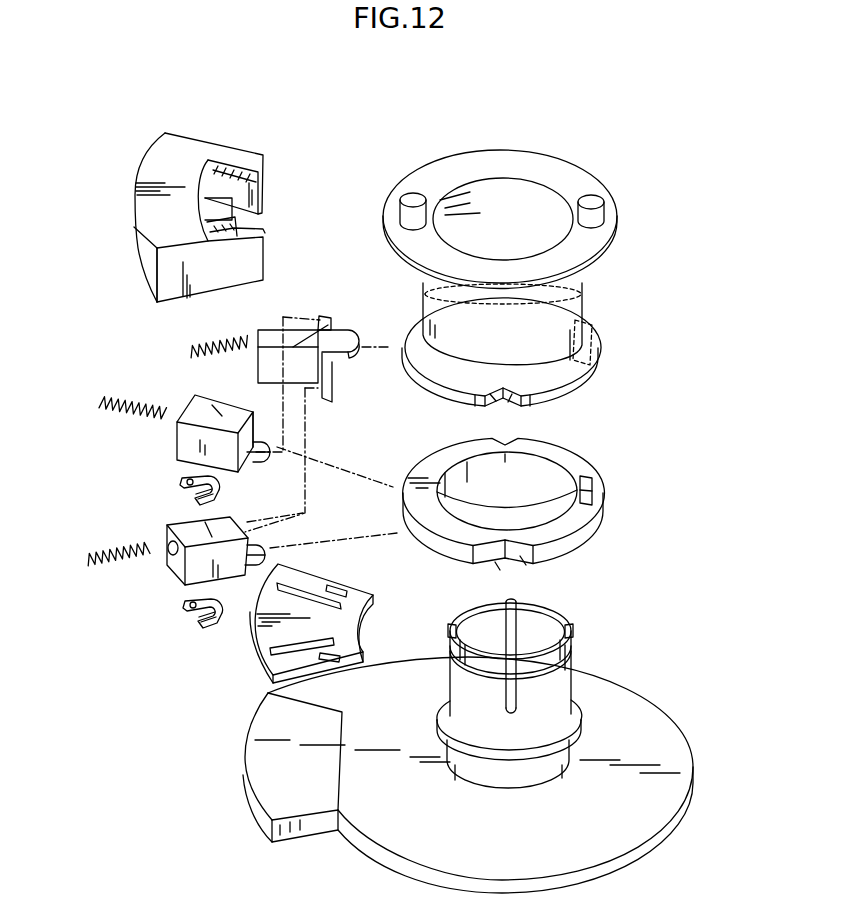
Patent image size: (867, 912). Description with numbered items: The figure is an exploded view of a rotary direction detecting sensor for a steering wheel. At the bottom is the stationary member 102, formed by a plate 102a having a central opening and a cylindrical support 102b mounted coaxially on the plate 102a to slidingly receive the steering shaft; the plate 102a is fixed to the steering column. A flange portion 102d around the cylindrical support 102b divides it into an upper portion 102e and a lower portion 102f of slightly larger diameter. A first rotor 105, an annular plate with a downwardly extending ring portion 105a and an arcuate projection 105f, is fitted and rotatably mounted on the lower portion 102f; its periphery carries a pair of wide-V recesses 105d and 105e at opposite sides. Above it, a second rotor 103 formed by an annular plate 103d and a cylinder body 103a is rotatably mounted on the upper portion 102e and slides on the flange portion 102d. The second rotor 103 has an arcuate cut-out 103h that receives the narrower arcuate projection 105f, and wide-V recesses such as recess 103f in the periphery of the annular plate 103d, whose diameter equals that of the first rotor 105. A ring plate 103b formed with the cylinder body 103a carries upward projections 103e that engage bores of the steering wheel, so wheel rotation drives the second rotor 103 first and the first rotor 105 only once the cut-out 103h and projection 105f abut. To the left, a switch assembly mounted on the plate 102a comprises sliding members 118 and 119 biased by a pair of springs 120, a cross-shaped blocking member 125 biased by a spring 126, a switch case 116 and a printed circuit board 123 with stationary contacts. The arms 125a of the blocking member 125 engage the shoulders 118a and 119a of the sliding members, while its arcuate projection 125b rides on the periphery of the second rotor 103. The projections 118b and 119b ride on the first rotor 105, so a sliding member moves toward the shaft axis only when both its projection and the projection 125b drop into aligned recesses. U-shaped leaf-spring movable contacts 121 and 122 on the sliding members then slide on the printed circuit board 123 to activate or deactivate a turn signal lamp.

The stationary member 102 is at (504, 741).
The plate 102a is at (673, 743).
The cylindrical support 102b is at (565, 652).
The flange portion 102d is at (580, 725).
The upper portion 102e is at (555, 690).
The lower portion 102f is at (563, 755).
The second rotor 103 is at (540, 263).
The cylinder body 103a is at (583, 283).
The ring plate 103b is at (613, 213).
The annular plate 103d is at (600, 325).
The projections 103e is at (588, 197).
The recess 103f is at (522, 410).
The arcuate cut-out 103h is at (592, 370).
The first rotor 105 is at (522, 492).
The ring portion 105a is at (505, 558).
The recess 105d is at (526, 564).
The recess 105e is at (483, 437).
The arcuate projection 105f is at (593, 484).
The switch case 116 is at (207, 143).
The sliding member 118 is at (253, 570).
The shoulder 118a is at (300, 523).
The projection 118b is at (267, 557).
The sliding member 119 is at (247, 433).
The shoulder 119a is at (257, 423).
The projection 119b is at (268, 466).
The springs 120 is at (118, 408).
The movable contact 121 is at (182, 485).
The movable contact 122 is at (200, 625).
The printed circuit board 123 is at (260, 663).
The blocking member 125 is at (318, 391).
The arms 125a is at (328, 314).
The projection 125b is at (358, 352).
The spring 126 is at (210, 346).